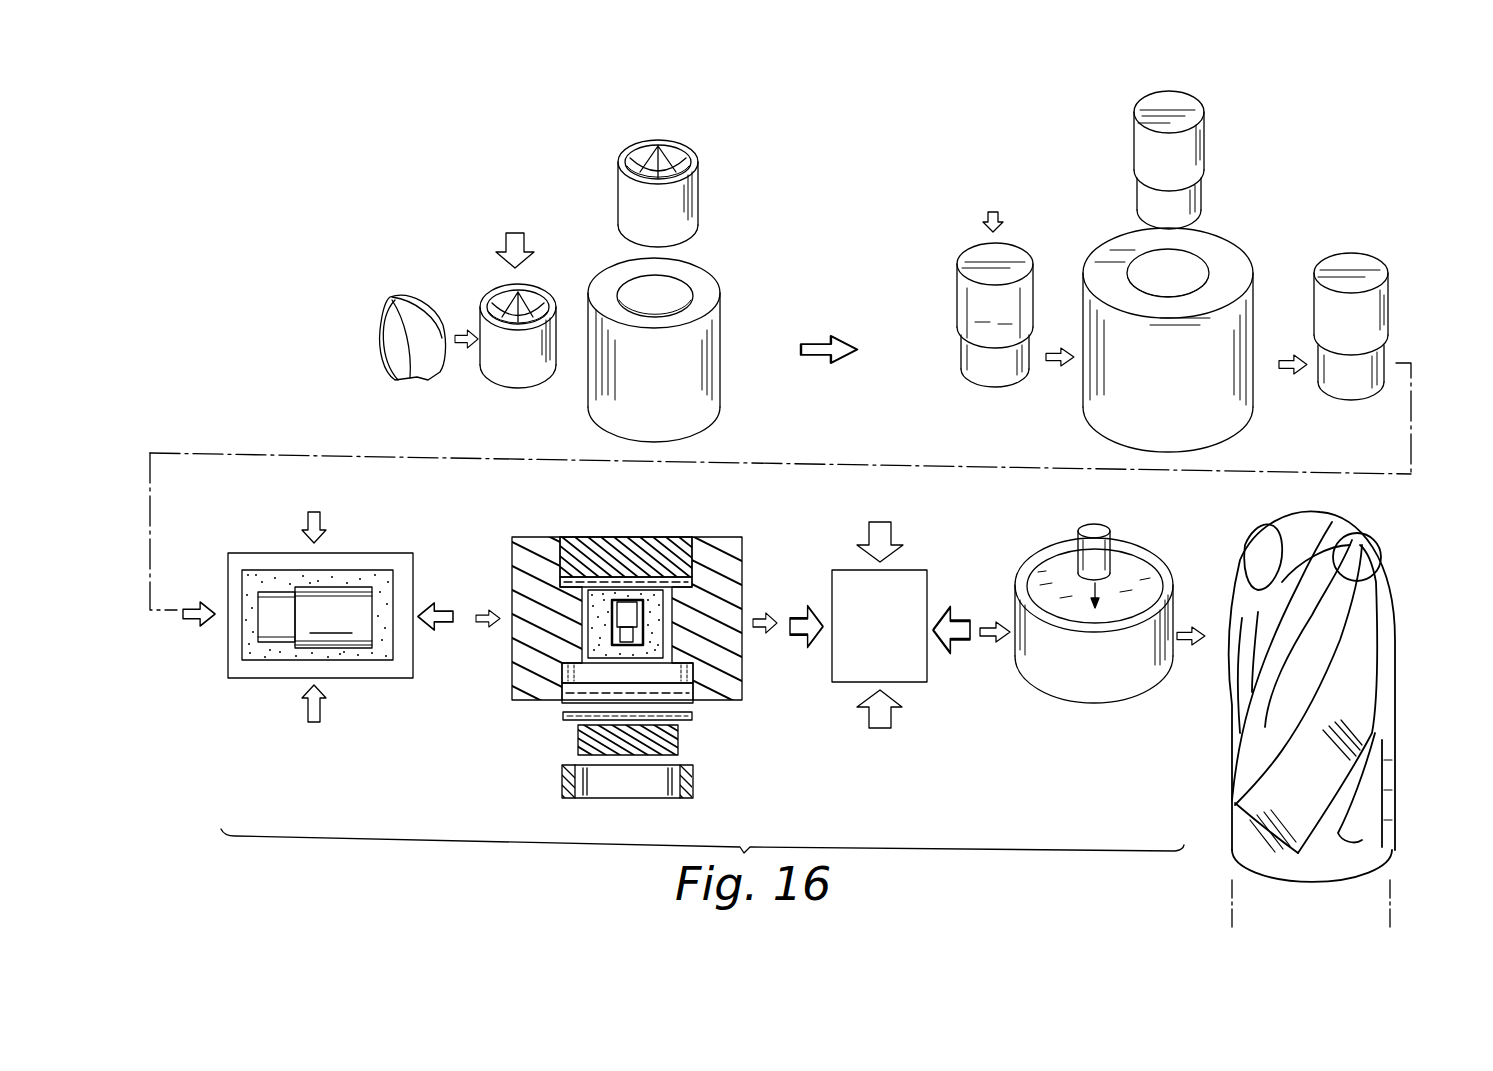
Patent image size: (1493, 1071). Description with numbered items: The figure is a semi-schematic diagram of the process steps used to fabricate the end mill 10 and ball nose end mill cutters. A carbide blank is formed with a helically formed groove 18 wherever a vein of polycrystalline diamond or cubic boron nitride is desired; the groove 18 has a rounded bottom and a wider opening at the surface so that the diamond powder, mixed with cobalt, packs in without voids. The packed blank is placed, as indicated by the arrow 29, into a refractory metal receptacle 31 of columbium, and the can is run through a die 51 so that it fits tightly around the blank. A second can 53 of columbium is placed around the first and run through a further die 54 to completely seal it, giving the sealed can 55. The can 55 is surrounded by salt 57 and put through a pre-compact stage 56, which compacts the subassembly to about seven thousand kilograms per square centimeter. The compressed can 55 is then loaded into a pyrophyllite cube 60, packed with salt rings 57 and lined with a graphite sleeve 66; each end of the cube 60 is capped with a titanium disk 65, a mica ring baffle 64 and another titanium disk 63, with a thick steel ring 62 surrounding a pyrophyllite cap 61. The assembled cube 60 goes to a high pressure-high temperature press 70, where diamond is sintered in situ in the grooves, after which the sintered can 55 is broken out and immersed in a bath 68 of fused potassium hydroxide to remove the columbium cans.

The end mill 10 is at (1400, 572).
The helically formed groove 18 is at (421, 378).
The assembly step arrow 29 is at (520, 244).
The refractory metal can or receptacle 31 is at (523, 379).
The die 51 is at (719, 390).
The second can 53 is at (1206, 152).
The die 54 is at (1244, 415).
The sealed can 55 is at (1360, 240).
The pre-compact press 56 is at (362, 547).
The salt rings 57 is at (391, 582).
The pyrophyllite cube 60 is at (690, 597).
The pyrophyllite cap 61 is at (679, 740).
The steel ring 62 is at (692, 782).
The titanium disk 63 is at (692, 716).
The mica ring baffle 64 is at (668, 583).
The titanium disk 65 is at (582, 590).
The graphite sleeve 66 is at (588, 630).
The can 68 is at (1158, 562).
The high pressure-high temperature press 70 is at (910, 570).